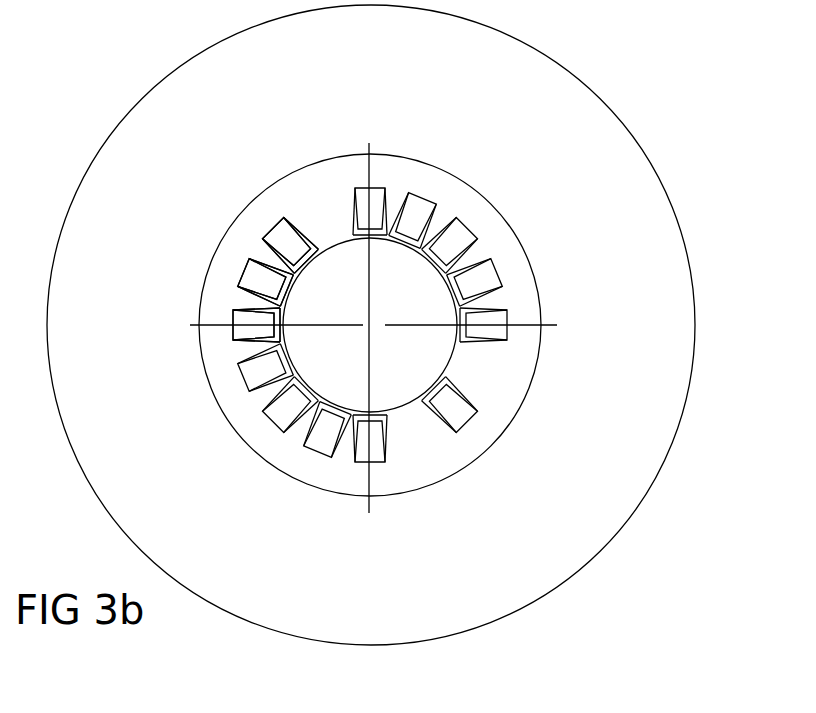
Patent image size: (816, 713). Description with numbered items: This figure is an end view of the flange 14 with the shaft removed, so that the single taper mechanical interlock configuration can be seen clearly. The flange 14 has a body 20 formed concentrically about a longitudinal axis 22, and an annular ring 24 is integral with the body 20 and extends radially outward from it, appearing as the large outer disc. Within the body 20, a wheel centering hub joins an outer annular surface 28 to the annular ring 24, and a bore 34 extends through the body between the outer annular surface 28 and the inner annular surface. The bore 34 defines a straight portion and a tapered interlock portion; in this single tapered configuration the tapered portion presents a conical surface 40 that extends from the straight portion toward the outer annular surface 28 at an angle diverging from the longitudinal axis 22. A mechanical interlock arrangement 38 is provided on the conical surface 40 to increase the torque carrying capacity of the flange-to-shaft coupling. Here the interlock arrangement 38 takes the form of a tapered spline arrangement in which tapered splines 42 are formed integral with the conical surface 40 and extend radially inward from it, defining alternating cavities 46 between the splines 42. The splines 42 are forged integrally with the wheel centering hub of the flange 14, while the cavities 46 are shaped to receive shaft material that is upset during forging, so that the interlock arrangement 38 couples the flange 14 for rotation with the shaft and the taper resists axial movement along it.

The flange 14 is at (642, 93).
The body 20 is at (202, 240).
The longitudinal axis 22 is at (372, 322).
The annular ring 24 is at (134, 364).
The outer annular surface 28 is at (490, 225).
The bore 34 is at (426, 373).
The mechanical interlock arrangement 38 is at (297, 190).
The conical surface 40 is at (248, 262).
The tapered splines 42 is at (298, 257).
The cavities 46 is at (257, 256).